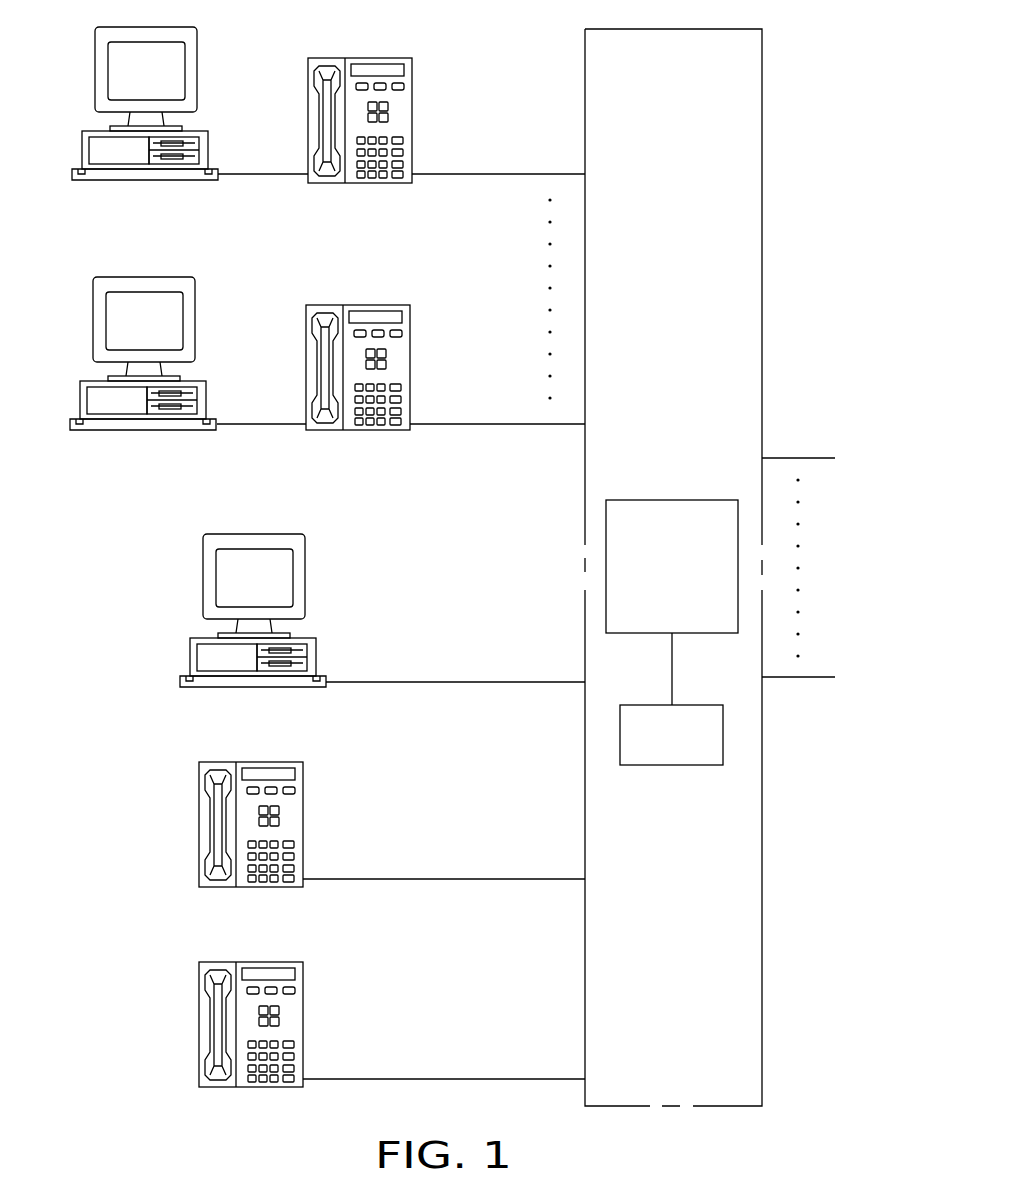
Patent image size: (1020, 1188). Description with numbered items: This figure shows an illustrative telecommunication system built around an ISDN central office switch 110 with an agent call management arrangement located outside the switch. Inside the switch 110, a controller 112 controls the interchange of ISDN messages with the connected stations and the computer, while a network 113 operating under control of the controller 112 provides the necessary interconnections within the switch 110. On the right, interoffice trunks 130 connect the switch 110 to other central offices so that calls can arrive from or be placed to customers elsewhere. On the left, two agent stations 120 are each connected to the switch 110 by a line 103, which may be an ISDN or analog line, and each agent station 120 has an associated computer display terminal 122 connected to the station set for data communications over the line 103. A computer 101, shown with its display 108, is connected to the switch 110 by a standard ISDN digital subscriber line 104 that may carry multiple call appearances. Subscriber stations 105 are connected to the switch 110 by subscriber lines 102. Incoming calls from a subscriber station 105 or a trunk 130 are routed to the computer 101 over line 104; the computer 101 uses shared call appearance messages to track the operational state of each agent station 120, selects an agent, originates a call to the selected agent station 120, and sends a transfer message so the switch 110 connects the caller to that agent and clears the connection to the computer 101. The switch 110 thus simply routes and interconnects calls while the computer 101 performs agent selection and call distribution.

The ISDN central office switch 110 is at (680, 29).
The network 113 is at (682, 500).
The controller 112 is at (682, 705).
The interoffice trunks 130 is at (819, 458).
The computer display terminal 122 is at (148, 27).
The agent station 120 is at (360, 58).
The ISDN line 103 is at (497, 174).
The display 108 is at (307, 580).
The computer 101 is at (319, 657).
The ISDN digital subscriber line 104 is at (455, 682).
The subscriber station 105 is at (254, 762).
The subscriber line 102 is at (443, 879).